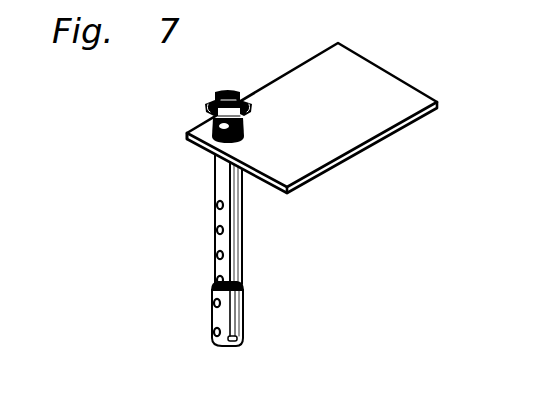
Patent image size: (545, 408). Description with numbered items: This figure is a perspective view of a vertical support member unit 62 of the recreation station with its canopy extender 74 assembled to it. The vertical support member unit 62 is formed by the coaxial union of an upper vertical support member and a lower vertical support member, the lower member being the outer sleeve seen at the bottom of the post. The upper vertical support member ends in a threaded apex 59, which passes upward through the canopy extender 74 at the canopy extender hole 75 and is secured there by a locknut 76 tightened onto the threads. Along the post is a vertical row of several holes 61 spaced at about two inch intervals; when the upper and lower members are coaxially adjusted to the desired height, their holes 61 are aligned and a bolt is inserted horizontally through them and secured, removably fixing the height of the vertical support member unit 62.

The threaded apex 59 is at (213, 129).
The holes 61 is at (212, 301).
The vertical support member unit 62 is at (243, 301).
The canopy extender 74 is at (385, 121).
The canopy extender hole 75 is at (189, 136).
The locknut 76 is at (226, 91).